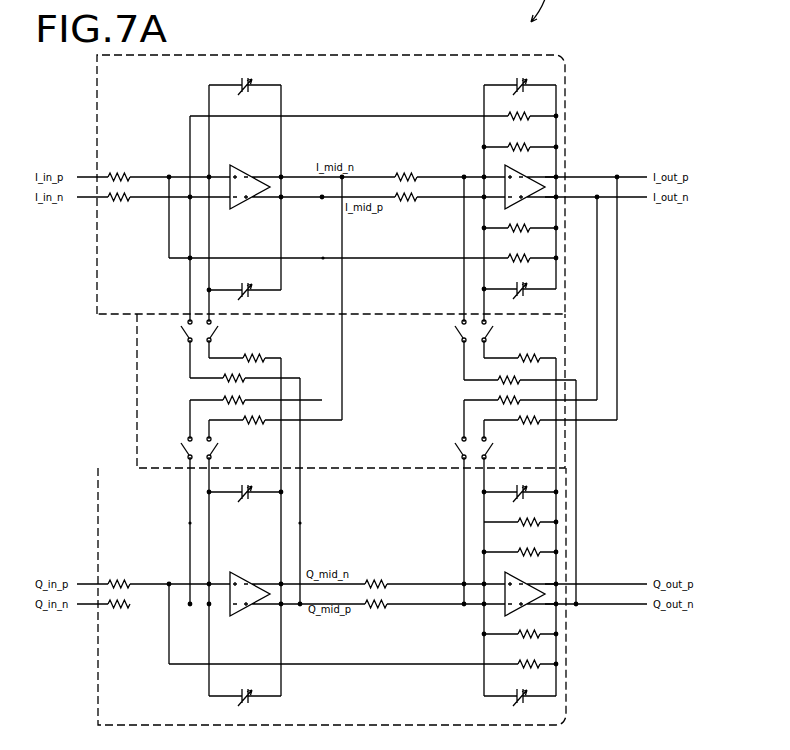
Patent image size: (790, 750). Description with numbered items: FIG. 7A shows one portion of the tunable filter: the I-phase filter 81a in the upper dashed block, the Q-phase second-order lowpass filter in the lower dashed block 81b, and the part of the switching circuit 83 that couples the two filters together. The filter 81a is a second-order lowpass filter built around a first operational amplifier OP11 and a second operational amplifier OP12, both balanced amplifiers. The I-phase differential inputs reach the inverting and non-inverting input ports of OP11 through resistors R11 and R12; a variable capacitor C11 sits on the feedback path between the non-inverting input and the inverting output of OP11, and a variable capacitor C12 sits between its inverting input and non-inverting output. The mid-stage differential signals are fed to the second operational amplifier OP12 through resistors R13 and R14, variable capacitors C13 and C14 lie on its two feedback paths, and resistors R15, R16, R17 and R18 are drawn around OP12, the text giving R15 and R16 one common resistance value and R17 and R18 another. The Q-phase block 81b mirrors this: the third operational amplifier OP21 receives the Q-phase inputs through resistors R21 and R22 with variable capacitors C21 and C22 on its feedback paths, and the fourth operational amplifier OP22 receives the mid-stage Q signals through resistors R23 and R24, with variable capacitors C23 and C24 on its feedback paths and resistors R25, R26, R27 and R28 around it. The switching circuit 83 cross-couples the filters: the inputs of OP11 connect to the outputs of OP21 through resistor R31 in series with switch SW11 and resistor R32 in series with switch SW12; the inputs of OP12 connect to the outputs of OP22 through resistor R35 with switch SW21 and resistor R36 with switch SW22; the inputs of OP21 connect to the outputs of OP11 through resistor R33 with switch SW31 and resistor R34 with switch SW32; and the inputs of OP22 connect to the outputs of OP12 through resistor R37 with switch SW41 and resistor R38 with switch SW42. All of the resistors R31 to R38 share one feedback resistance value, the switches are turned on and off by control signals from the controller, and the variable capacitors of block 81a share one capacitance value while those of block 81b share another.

The filter 81a is at (557, 53).
The Q-channel filter section 81b is at (560, 727).
The switching circuit 83 is at (137, 358).
The resistor R11 is at (119, 170).
The resistor R12 is at (119, 204).
The resistor R13 is at (406, 170).
The resistor R14 is at (406, 204).
The resistor R15 is at (519, 140).
The resistor R16 is at (519, 221).
The resistor R17 is at (519, 109).
The resistor R18 is at (519, 251).
The resistor R21 is at (119, 577).
The resistor R22 is at (119, 611).
The resistor R23 is at (376, 577).
The resistor R24 is at (376, 611).
The resistor R25 is at (525, 545).
The resistor R26 is at (525, 627).
The resistor R27 is at (525, 515).
The resistor R28 is at (525, 657).
The resistor R31 is at (234, 372).
The resistor R32 is at (254, 352).
The resistor R33 is at (232, 408).
The resistor R34 is at (255, 428).
The resistor R35 is at (509, 373).
The resistor R36 is at (529, 352).
The resistor R37 is at (507, 408).
The resistor R38 is at (529, 428).
The variable capacitor C11 is at (245, 79).
The variable capacitor C12 is at (245, 296).
The variable capacitor C13 is at (520, 283).
The variable capacitor C14 is at (520, 79).
The variable capacitor C21 is at (245, 486).
The variable capacitor C22 is at (245, 703).
The variable capacitor C23 is at (520, 486).
The variable capacitor C24 is at (520, 690).
The first operational amplifier OP11 is at (255, 184).
The second operational amplifier OP12 is at (530, 184).
The third operational amplifier OP21 is at (255, 591).
The fourth operational amplifier OP22 is at (530, 591).
The switch SW11 is at (169, 333).
The switch SW12 is at (227, 333).
The switch SW21 is at (443, 333).
The switch SW22 is at (502, 333).
The switch SW31 is at (169, 450).
The switch SW32 is at (227, 450).
The switch SW41 is at (443, 450).
The switch SW42 is at (502, 450).